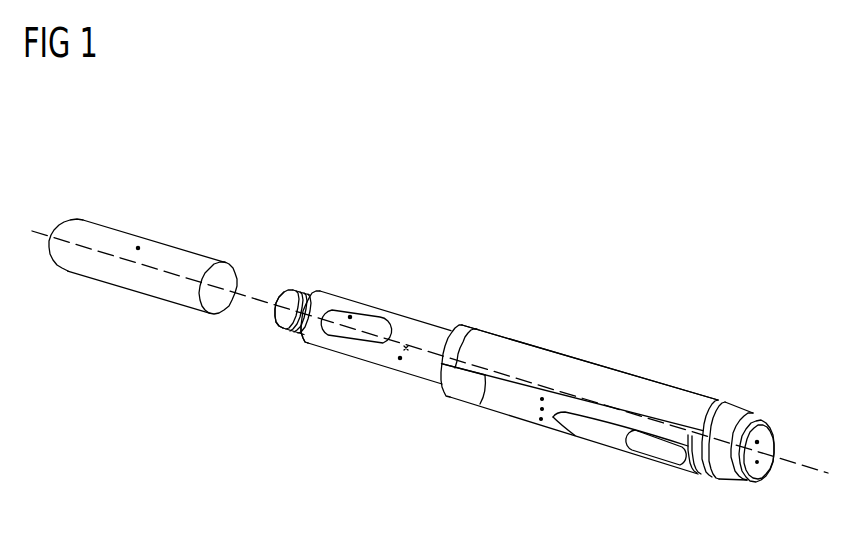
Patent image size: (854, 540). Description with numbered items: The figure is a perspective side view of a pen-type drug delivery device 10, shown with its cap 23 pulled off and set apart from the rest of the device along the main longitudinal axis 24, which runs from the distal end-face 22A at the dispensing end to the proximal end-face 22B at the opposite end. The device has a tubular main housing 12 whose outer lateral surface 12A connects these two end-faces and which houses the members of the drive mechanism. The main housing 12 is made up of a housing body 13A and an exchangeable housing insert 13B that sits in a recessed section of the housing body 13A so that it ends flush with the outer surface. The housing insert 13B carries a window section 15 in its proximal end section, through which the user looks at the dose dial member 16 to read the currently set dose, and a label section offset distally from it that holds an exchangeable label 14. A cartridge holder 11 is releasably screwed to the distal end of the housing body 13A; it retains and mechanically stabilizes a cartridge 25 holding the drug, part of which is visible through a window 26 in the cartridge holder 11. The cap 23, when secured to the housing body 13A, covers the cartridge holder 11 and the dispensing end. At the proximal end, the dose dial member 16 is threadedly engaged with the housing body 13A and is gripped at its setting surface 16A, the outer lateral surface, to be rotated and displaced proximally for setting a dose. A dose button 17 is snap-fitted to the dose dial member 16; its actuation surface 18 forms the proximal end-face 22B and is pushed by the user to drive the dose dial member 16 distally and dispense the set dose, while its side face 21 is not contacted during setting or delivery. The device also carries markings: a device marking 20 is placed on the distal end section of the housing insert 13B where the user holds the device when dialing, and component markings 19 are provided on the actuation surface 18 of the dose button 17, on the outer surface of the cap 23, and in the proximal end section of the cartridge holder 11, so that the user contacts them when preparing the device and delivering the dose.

The drug delivery device 10 is at (643, 353).
The cartridge holder 11 is at (340, 353).
The main housing 12 is at (502, 326).
The outer lateral surface 12A is at (567, 357).
The housing body 13A is at (455, 392).
The housing insert 13B is at (495, 397).
The label 14 is at (593, 430).
The window section 15 is at (640, 450).
The dose dial member 16 is at (751, 390).
The setting surface 16A is at (730, 408).
The dose button 17 is at (774, 415).
The actuation surface 18 is at (769, 445).
The component marking 19 is at (138, 248).
The device marking 20 is at (540, 421).
The side face 21 is at (720, 478).
The distal end-face 22A is at (277, 310).
The proximal end-face 22B is at (775, 430).
The cap 23 is at (118, 287).
The axis 24 is at (276, 307).
The cartridge 25 is at (373, 325).
The window 26 is at (312, 338).